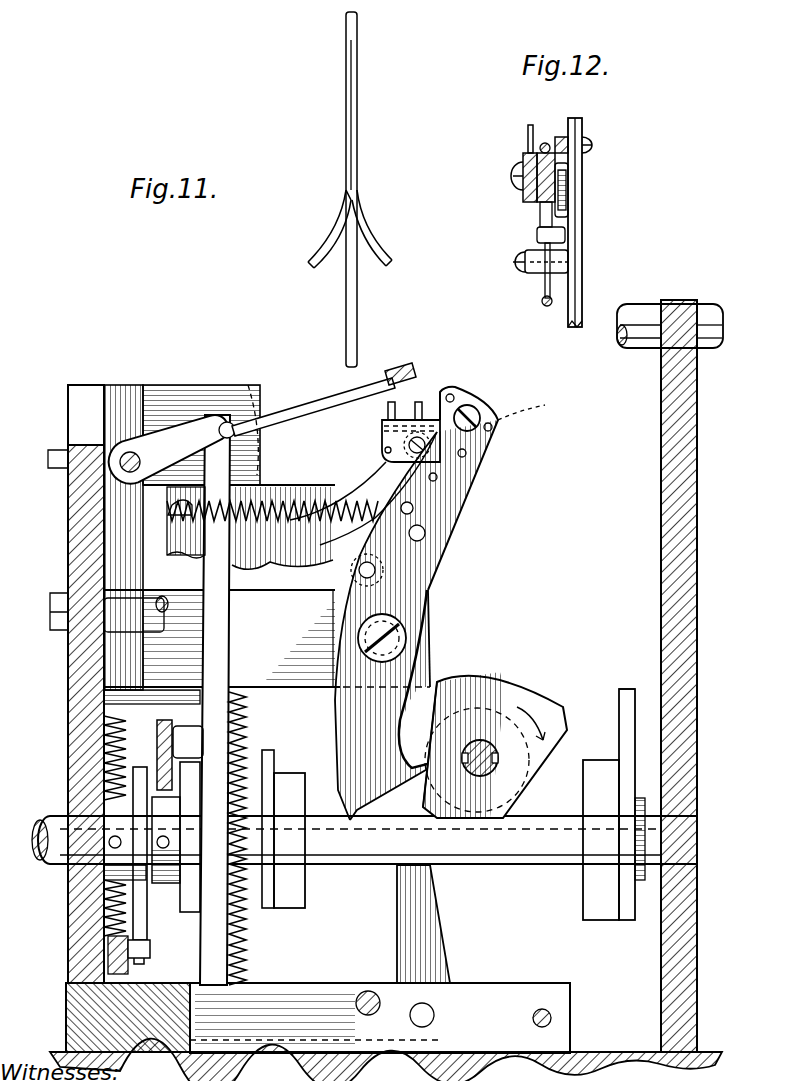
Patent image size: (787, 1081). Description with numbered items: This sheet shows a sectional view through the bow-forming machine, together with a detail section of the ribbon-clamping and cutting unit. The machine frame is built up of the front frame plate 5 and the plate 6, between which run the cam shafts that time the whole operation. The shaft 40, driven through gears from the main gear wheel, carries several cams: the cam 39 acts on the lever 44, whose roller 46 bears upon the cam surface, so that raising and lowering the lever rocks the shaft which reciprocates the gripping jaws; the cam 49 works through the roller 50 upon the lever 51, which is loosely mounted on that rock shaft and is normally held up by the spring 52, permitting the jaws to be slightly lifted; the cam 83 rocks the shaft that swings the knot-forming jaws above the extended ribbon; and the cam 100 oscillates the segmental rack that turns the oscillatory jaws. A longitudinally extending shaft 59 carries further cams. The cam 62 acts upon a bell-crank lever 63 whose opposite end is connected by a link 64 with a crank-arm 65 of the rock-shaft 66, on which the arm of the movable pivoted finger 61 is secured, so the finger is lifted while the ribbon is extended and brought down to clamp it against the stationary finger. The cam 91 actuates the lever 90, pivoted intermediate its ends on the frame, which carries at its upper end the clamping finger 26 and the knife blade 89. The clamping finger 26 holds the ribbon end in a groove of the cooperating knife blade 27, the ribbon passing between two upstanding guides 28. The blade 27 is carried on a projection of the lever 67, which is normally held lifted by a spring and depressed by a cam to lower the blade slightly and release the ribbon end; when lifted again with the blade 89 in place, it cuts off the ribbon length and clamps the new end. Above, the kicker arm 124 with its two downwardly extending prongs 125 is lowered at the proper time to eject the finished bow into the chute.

In FIG. 11, the front frame plate 5 is at (68, 728).
In FIG. 11, the plate 6 is at (697, 535).
In FIG. 11, the clamping finger 26 is at (490, 425).
In FIG. 12, the clamping finger 26 is at (545, 143).
In FIG. 11, the knife blade 27 is at (382, 438).
In FIG. 12, the knife blade 27 is at (526, 153).
In FIG. 11, the upstanding guides 28 is at (385, 395).
In FIG. 12, the upstanding guides 28 is at (531, 125).
In FIG. 11, the cam 39 is at (190, 832).
In FIG. 11, the shaft 40 is at (530, 853).
In FIG. 11, the lever 44 is at (130, 762).
In FIG. 11, the roller 46 is at (190, 742).
In FIG. 11, the cam 49 is at (147, 918).
In FIG. 11, the roller 50 is at (150, 952).
In FIG. 11, the lever 51 is at (106, 972).
In FIG. 11, the spring 52 is at (108, 910).
In FIG. 11, the shaft 59 is at (487, 780).
In FIG. 11, the movable pivoted finger 61 is at (400, 372).
In FIG. 11, the cam 62 is at (520, 690).
In FIG. 11, the bell-crank lever 63 is at (435, 918).
In FIG. 11, the link 64 is at (232, 650).
In FIG. 11, the crank-arm 65 is at (186, 514).
In FIG. 11, the rock-shaft 66 is at (125, 415).
In FIG. 11, the lever 67 is at (333, 485).
In FIG. 12, the lever 67 is at (527, 200).
In FIG. 11, the cam 83 is at (270, 785).
In FIG. 11, the knife blade 89 is at (440, 410).
In FIG. 12, the knife blade 89 is at (570, 150).
In FIG. 11, the lever 90 is at (440, 570).
In FIG. 12, the lever 90 is at (582, 218).
In FIG. 11, the cam 91 is at (438, 680).
In FIG. 11, the cam 100 is at (620, 716).
In FIG. 11, the kicker arm 124 is at (357, 310).
In FIG. 11, the prongs 125 is at (370, 254).